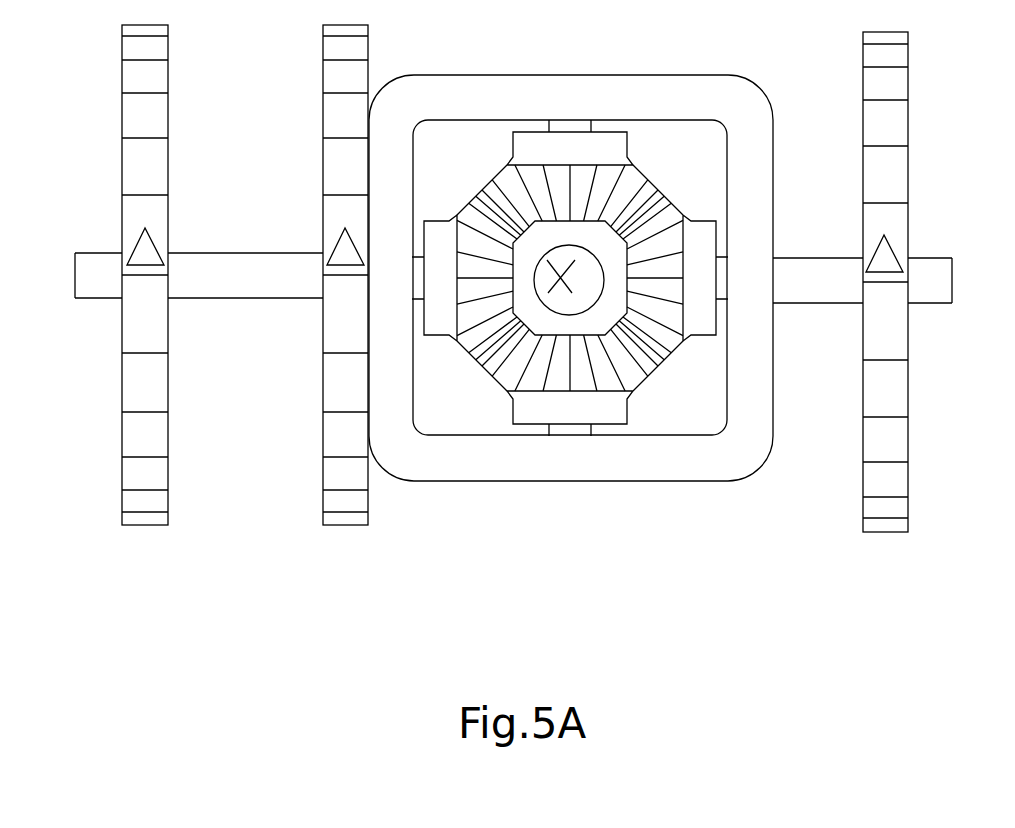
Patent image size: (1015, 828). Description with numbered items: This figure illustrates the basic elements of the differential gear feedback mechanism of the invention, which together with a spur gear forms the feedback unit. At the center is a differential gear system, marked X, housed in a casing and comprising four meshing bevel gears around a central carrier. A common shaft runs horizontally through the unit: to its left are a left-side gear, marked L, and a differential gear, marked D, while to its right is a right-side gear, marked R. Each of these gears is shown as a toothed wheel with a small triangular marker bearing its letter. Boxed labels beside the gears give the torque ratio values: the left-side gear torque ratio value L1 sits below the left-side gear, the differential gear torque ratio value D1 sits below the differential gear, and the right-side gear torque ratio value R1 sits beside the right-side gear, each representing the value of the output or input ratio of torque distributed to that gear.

The left-side gear torque ratio value L1 is at (98, 275).
The differential gear torque ratio value D1 is at (388, 291).
The right-side gear torque ratio value R1 is at (930, 282).